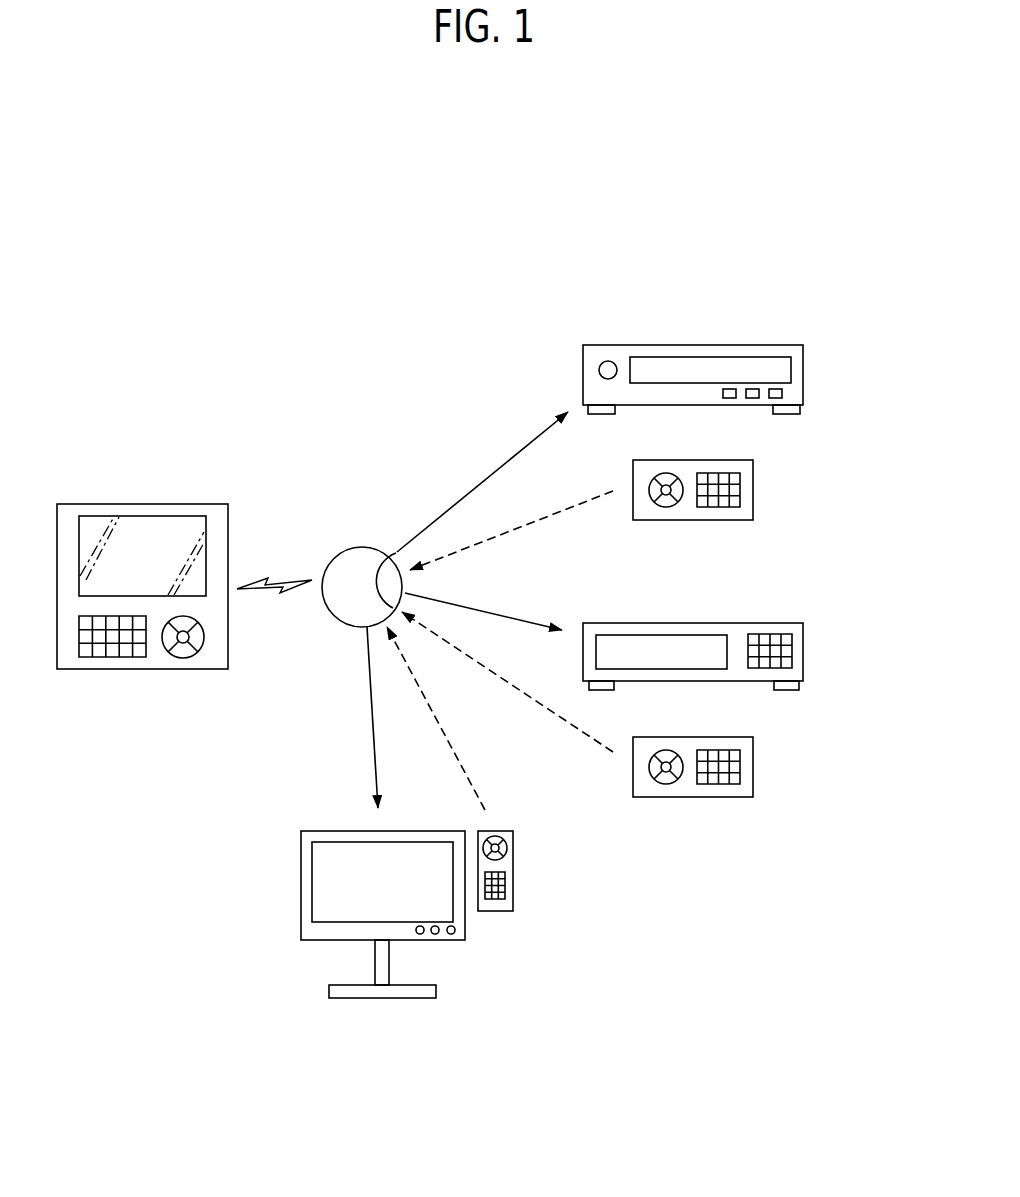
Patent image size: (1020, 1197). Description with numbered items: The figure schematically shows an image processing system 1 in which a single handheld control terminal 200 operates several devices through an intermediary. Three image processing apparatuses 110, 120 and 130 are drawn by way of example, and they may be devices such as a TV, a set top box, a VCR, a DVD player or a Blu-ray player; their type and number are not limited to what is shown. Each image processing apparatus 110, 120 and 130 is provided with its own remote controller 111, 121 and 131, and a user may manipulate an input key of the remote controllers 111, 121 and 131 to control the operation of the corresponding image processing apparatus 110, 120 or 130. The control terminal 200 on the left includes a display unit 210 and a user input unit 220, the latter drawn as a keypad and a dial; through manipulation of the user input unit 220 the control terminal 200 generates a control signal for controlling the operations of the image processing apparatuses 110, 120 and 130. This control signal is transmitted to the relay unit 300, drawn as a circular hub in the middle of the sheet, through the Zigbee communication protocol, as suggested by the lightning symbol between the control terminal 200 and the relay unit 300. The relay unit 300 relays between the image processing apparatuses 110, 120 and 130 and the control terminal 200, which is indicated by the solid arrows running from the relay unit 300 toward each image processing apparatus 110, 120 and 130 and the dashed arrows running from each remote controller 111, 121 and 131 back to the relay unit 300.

The image processing system 1 is at (271, 328).
The image processing apparatus 110 is at (300, 877).
The remote controller 111 is at (498, 912).
The image processing apparatus 120 is at (805, 647).
The remote controller 121 is at (755, 765).
The image processing apparatus 130 is at (805, 367).
The remote controller 131 is at (755, 483).
The control terminal 200 is at (97, 503).
The display unit 210 is at (172, 520).
The user input unit 220 is at (178, 653).
The relay unit 300 is at (357, 552).